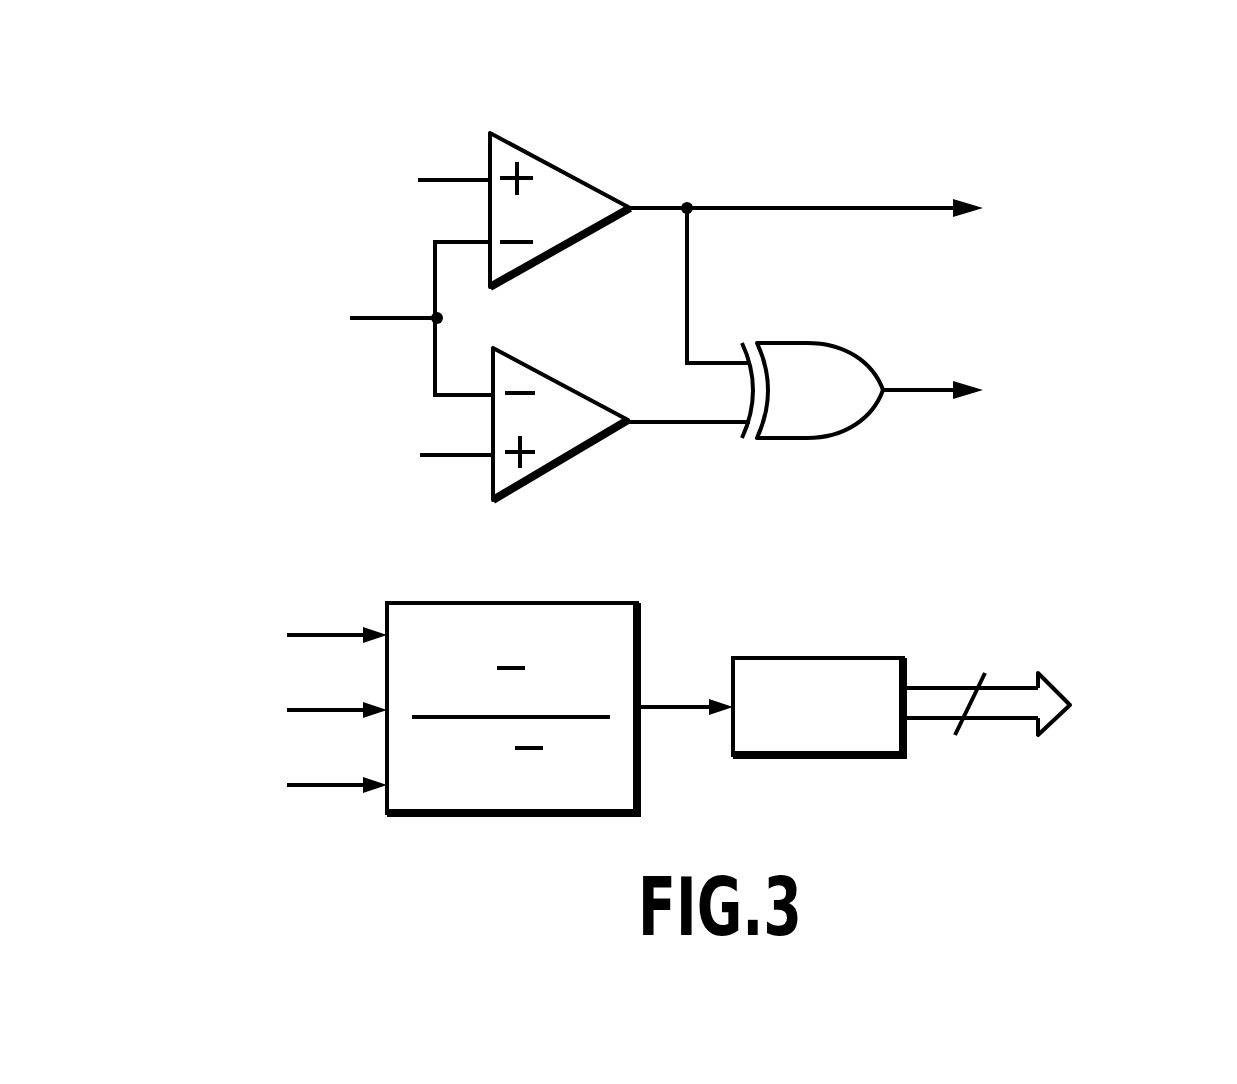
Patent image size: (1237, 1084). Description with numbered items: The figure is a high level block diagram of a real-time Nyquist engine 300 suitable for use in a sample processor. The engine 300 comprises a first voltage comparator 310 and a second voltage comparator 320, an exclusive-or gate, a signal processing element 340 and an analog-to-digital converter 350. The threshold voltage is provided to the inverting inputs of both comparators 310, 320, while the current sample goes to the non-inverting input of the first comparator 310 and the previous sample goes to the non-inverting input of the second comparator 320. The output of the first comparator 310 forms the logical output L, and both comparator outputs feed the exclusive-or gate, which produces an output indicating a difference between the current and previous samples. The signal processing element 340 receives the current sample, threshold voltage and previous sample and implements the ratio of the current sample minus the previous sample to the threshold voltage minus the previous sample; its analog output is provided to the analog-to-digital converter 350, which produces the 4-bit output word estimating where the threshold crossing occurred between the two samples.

The real-time Nyquist engine 300 is at (1112, 232).
The first voltage comparator 310 is at (598, 114).
The second voltage comparator 320 is at (565, 384).
The signal processing element 340 is at (595, 601).
The analog-to-digital converter 350 is at (818, 657).
The 4-bit bus 4 is at (955, 643).